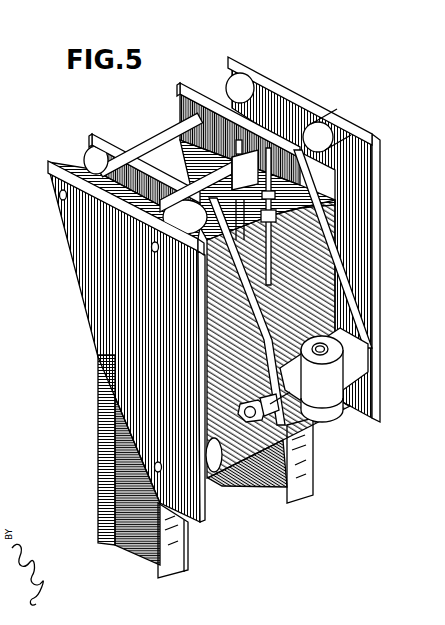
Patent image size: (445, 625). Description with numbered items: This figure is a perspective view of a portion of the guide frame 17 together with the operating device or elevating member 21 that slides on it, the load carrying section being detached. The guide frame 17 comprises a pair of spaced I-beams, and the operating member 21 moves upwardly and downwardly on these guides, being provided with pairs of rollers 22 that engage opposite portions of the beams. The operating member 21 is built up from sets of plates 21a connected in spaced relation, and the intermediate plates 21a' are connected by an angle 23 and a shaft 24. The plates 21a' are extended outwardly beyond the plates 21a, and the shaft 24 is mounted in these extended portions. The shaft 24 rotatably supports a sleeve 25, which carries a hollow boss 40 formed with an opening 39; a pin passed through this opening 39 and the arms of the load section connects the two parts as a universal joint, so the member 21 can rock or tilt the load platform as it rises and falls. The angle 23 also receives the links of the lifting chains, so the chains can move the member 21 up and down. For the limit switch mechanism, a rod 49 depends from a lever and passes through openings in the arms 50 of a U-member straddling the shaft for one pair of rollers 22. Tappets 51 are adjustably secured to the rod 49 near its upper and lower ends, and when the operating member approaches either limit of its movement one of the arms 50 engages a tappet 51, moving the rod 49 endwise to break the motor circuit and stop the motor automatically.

The guide frame 17 is at (128, 158).
The operating device 21 is at (104, 431).
The plates 21a is at (215, 295).
The intermediate plates 21a' is at (237, 333).
The rollers 22 is at (85, 163).
The angle 23 is at (198, 185).
The shaft 24 is at (268, 407).
The sleeve 25 is at (347, 344).
The opening 39 is at (308, 364).
The hollow boss 40 is at (333, 418).
The rod 49 is at (272, 150).
The arms 50 is at (276, 194).
The tappets 51 is at (277, 215).